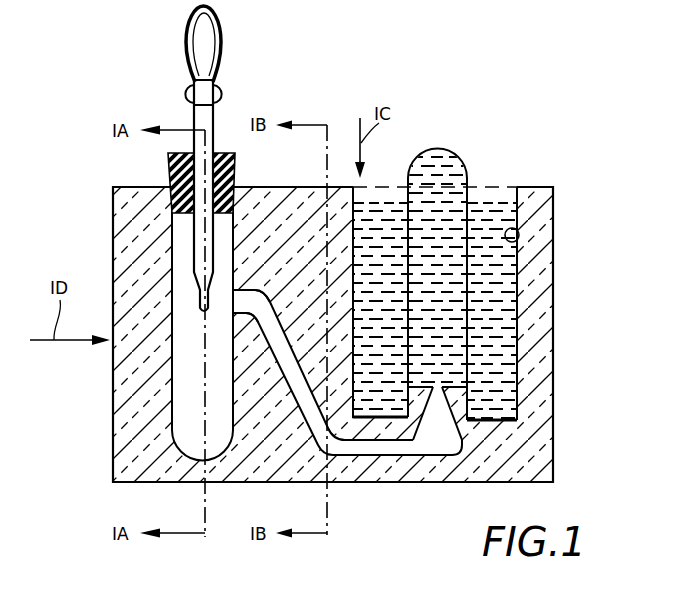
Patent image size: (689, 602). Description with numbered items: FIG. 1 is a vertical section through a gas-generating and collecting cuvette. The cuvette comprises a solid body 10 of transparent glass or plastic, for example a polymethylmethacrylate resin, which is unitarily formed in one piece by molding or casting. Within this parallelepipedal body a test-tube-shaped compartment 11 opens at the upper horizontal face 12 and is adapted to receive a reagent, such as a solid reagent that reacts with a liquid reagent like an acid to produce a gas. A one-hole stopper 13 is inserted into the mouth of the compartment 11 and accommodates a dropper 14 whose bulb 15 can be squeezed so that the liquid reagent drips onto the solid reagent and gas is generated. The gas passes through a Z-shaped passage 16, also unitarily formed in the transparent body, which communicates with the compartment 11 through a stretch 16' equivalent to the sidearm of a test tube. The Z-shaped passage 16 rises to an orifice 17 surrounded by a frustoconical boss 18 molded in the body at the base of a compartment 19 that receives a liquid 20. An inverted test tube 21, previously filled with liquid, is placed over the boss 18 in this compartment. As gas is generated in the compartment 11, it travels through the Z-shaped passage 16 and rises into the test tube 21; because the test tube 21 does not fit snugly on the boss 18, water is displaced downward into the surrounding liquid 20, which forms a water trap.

The solid body 10 is at (113, 437).
The test-tube-shaped compartment 11 is at (176, 380).
The upper horizontal face 12 is at (113, 187).
The one-hole stopper 13 is at (235, 172).
The dropper 14 is at (207, 123).
The bulb 15 is at (225, 37).
The Z-shaped passage 16 is at (347, 372).
The stretch 16' is at (253, 279).
The orifice 17 is at (455, 402).
The frustoconical boss 18 is at (470, 403).
The compartment 19 is at (518, 232).
The liquid 20 is at (507, 320).
The inverted test tube 21 is at (448, 149).